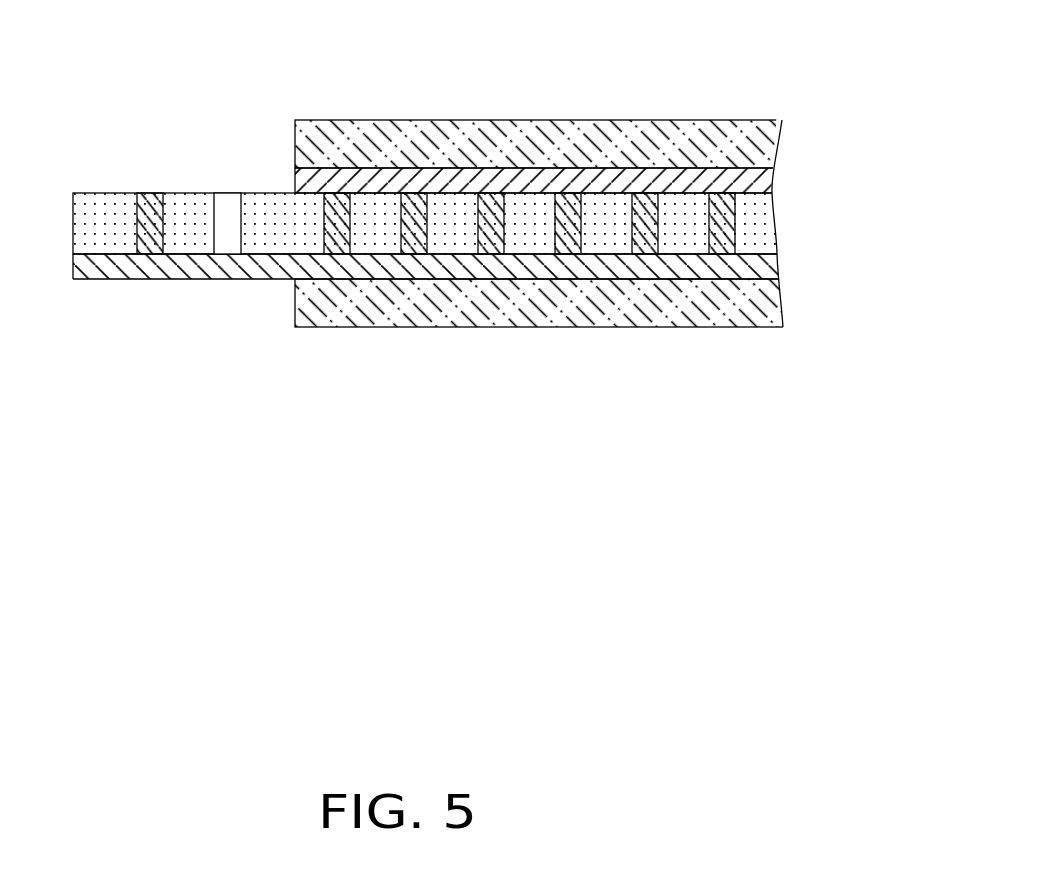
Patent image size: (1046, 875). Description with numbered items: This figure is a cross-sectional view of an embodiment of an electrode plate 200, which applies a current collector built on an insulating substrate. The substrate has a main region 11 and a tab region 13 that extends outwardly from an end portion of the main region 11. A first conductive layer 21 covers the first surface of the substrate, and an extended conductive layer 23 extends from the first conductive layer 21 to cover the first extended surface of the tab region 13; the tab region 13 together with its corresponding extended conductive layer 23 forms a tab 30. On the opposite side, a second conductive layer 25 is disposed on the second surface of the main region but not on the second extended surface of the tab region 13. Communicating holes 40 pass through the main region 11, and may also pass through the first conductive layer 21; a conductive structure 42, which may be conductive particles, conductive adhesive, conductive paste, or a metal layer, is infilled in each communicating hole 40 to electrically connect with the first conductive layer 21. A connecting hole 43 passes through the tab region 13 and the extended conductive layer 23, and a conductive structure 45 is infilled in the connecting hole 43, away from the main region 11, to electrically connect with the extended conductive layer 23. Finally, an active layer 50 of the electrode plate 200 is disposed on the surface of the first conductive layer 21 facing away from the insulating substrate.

The electrode plate 200 is at (491, 49).
The main region 11 is at (530, 237).
The tab region 13 is at (105, 235).
The first conductive layer 21 is at (443, 268).
The extended conductive layer 23 is at (188, 262).
The second conductive layer 25 is at (447, 176).
The tab 30 is at (227, 344).
The communicating hole 40 is at (733, 213).
The conductive structure 42 is at (728, 233).
The connecting hole 43 is at (137, 217).
The conductive structure 45 is at (152, 220).
The active layer 50 is at (650, 140).